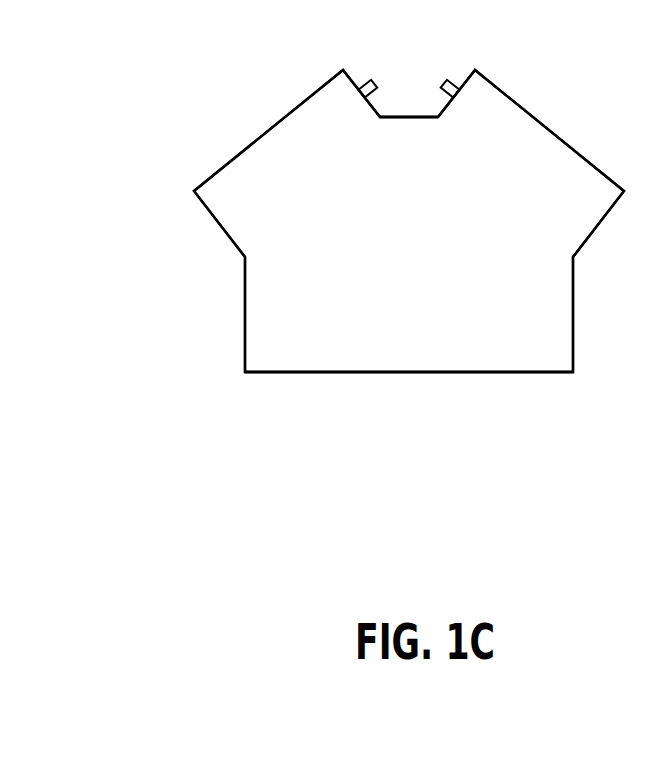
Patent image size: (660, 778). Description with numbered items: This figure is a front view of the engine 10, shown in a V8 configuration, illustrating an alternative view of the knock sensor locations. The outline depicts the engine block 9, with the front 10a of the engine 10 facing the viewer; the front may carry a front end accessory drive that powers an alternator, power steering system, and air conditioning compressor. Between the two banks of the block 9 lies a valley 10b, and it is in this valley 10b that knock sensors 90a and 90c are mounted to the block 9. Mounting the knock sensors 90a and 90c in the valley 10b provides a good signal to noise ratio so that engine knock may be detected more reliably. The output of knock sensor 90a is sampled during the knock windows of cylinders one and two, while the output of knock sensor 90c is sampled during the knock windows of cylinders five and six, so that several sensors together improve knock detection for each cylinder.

The engine block 9 is at (196, 288).
The engine 10 is at (203, 180).
The front of engine 10a is at (398, 367).
The valley 10b is at (398, 157).
The knock sensor 90a is at (375, 81).
The knock sensor 90c is at (445, 80).